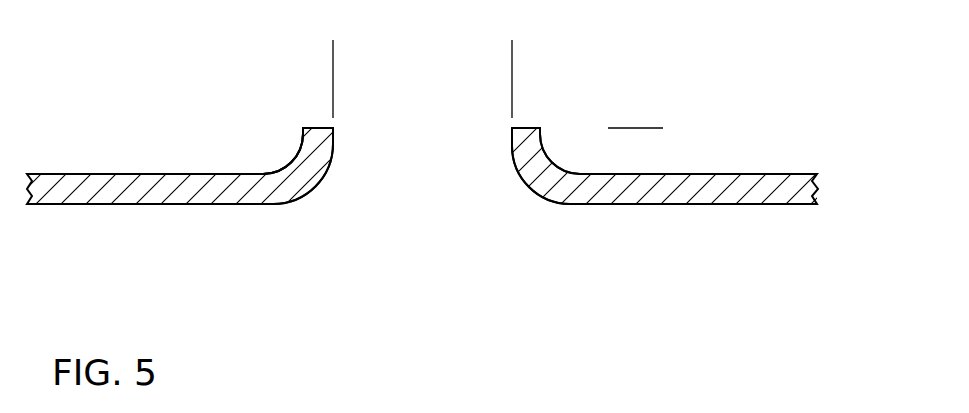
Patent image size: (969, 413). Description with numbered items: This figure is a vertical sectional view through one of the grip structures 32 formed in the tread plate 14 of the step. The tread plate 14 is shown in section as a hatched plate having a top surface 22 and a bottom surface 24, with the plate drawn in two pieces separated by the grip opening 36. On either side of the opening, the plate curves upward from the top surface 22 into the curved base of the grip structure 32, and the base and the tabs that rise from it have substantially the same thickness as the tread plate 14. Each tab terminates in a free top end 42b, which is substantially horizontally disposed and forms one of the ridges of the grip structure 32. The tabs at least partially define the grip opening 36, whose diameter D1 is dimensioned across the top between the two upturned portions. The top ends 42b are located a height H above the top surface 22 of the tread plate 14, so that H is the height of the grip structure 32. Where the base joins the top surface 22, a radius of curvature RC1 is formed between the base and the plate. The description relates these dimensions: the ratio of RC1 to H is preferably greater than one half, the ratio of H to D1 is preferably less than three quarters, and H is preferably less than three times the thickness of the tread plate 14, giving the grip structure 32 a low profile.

The tread plate 14 is at (788, 197).
The top surface 22 is at (82, 162).
The bottom surface 24 is at (171, 215).
The grip structure 32 is at (284, 108).
The grip opening 36 is at (447, 130).
The free top end 42b is at (322, 127).
The radius of curvature RC1 is at (281, 151).
The diameter of the grip opening D1 is at (499, 57).
The height of the grip structure H is at (647, 208).